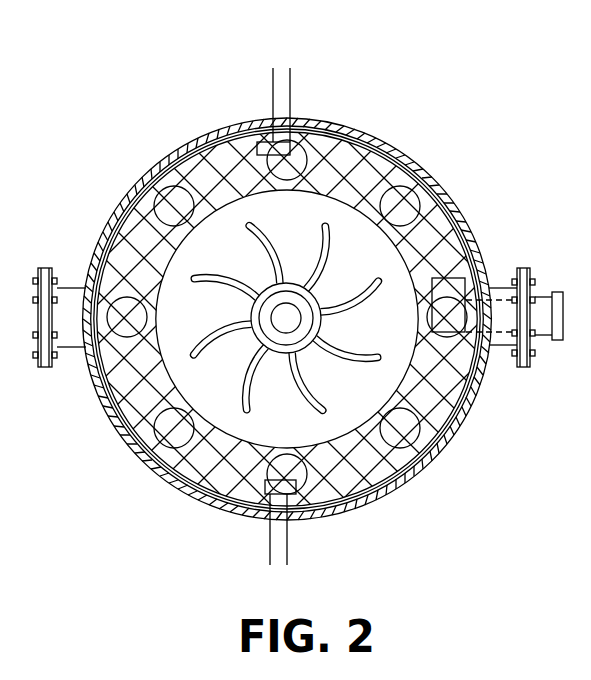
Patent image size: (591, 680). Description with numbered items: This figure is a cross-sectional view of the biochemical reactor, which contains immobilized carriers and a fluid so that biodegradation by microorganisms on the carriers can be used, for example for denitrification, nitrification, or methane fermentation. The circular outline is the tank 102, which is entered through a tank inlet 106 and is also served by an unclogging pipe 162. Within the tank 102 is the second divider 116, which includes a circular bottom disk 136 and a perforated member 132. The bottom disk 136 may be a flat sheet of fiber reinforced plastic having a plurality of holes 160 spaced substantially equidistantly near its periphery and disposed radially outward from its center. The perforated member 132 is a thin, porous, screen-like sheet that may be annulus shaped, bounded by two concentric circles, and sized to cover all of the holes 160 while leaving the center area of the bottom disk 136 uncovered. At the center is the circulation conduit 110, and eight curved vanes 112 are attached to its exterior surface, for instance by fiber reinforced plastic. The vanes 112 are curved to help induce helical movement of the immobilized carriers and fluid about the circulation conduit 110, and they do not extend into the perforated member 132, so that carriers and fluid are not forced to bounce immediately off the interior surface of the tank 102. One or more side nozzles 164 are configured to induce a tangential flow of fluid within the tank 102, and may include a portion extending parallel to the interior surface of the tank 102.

The tank 102 is at (439, 449).
The tank inlet 106 is at (472, 280).
The circulation conduit 110 is at (262, 290).
The vanes 112 is at (206, 352).
The second divider 116 is at (223, 225).
The perforated member 132 is at (456, 207).
The bottom disk 136 is at (372, 490).
The holes 160 is at (398, 178).
The unclogging pipe 162 is at (157, 470).
The side nozzles 164 is at (297, 99).